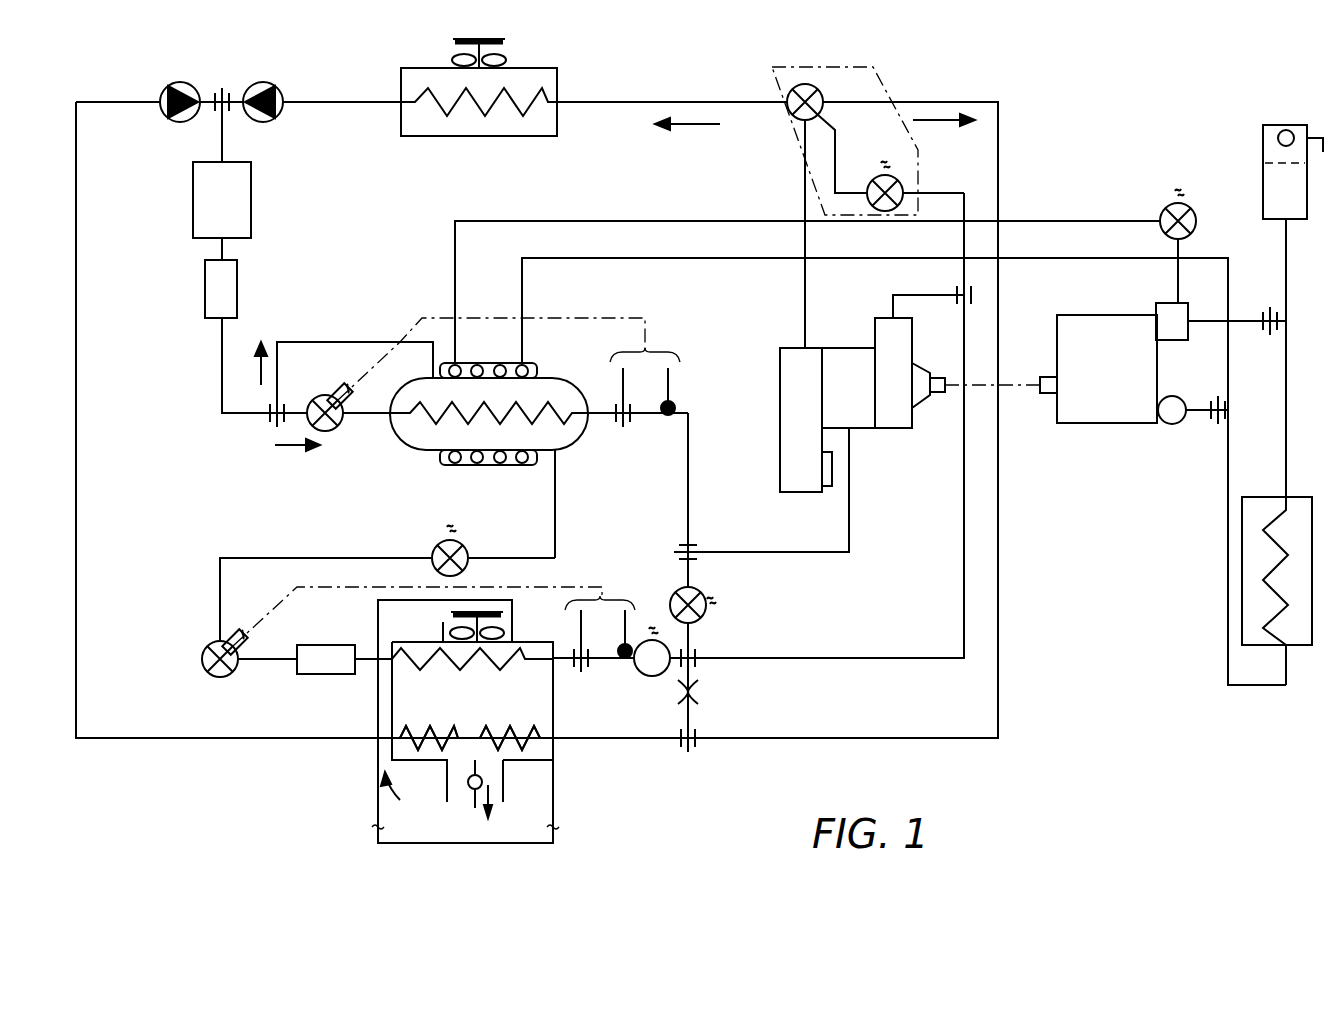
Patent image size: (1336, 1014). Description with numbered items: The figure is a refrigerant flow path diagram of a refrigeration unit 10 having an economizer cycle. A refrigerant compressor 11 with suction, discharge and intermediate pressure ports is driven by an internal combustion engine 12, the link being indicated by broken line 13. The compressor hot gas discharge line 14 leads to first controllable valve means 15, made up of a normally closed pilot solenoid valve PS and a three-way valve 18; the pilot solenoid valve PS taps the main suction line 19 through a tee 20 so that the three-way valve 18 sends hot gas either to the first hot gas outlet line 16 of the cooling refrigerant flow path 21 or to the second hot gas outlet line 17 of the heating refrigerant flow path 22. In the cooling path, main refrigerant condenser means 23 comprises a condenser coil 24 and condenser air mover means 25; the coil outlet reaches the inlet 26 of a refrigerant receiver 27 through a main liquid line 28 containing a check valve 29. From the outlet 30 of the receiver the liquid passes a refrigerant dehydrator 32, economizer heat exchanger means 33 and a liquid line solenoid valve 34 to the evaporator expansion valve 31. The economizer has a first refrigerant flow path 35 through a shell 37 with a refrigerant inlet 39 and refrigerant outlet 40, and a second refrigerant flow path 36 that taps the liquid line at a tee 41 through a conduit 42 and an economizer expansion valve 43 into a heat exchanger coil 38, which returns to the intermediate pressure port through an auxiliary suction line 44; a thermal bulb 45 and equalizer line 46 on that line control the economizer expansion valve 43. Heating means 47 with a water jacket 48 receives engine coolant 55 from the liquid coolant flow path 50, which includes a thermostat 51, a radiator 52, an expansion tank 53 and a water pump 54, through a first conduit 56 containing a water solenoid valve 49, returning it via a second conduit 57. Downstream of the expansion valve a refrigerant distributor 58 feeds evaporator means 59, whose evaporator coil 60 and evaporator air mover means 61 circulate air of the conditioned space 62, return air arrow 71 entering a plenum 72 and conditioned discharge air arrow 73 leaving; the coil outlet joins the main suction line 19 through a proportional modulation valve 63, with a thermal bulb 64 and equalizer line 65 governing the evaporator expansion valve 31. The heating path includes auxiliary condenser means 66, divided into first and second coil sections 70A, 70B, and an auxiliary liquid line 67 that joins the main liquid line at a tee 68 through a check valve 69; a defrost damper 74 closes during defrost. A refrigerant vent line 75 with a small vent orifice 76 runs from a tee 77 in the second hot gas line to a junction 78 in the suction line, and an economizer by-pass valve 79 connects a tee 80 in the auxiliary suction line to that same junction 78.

The refrigeration unit 10 is at (682, 32).
The refrigerant compressor 11 is at (880, 430).
The internal combustion engine 12 is at (1075, 425).
The broken line 13 is at (1010, 383).
The compressor hot gas discharge line 14 is at (805, 300).
The first controllable valve means 15 is at (818, 65).
The first hot gas outlet line 16 is at (697, 100).
The second hot gas outlet line 17 is at (925, 100).
The three-way valve 18 is at (820, 95).
The main suction line 19 is at (963, 500).
The tee 20 is at (958, 302).
The cooling refrigerant flow path 21 is at (705, 128).
The heating refrigerant flow path 22 is at (938, 124).
The main refrigerant condenser means 23 is at (398, 88).
The condenser coil 24 is at (520, 135).
The condenser air mover means 25 is at (500, 58).
The inlet 26 is at (222, 160).
The refrigerant receiver 27 is at (193, 205).
The main liquid line 28 is at (222, 395).
The check valve 29 is at (266, 84).
The outlet 30 is at (222, 250).
The evaporator expansion valve 31 is at (202, 660).
The refrigerant dehydrator 32 is at (205, 290).
The economizer heat exchanger means 33 is at (420, 455).
The liquid line solenoid valve 34 is at (432, 548).
The first refrigerant flow path 35 is at (247, 359).
The second refrigerant flow path 36 is at (294, 463).
The shell 37 is at (590, 445).
The heat exchanger coil 38 is at (450, 415).
The refrigerant inlet 39 is at (435, 380).
The refrigerant outlet 40 is at (560, 460).
The tee 41 is at (272, 425).
The conduit 42 is at (372, 420).
The economizer expansion valve 43 is at (318, 397).
The auxiliary suction line 44 is at (690, 440).
The thermal bulb 45 is at (676, 407).
The equalizer line 46 is at (626, 430).
The heating means 47 is at (470, 466).
The water jacket 48 is at (460, 378).
The water solenoid valve 49 is at (1160, 218).
The liquid coolant flow path 50 is at (1275, 371).
The thermostat 51 is at (1180, 342).
The radiator 52 is at (1300, 497).
The expansion tank 53 is at (1268, 125).
The water pump 54 is at (1178, 425).
The coolant 55 is at (1259, 130).
The first conduit 56 is at (1042, 219).
The second conduit 57 is at (1055, 262).
The refrigerant distributor 58 is at (322, 675).
The evaporator means 59 is at (490, 845).
The evaporator coil 60 is at (440, 665).
The evaporator air mover means 61 is at (502, 635).
The conditioned space 62 is at (545, 845).
The proportional modulation valve 63 is at (648, 677).
The thermal bulb 64 is at (628, 645).
The equalizer line 65 is at (585, 672).
The auxiliary condenser means 66 is at (488, 734).
The auxiliary liquid line 67 is at (178, 740).
The tee 68 is at (222, 95).
The check valve 69 is at (168, 88).
The first coil section 70A is at (425, 735).
The second coil section 70B is at (512, 735).
The return air arrow 71 is at (412, 808).
The plenum 72 is at (378, 615).
The conditioned discharge air arrow 73 is at (480, 810).
The defrost damper 74 is at (482, 782).
The refrigerant vent line 75 is at (700, 722).
The vent orifice 76 is at (700, 692).
The tee 77 is at (692, 745).
The junction 78 is at (700, 655).
The economizer by-pass valve 79 is at (708, 600).
The tee 80 is at (700, 550).
The pilot solenoid valve PS is at (878, 176).